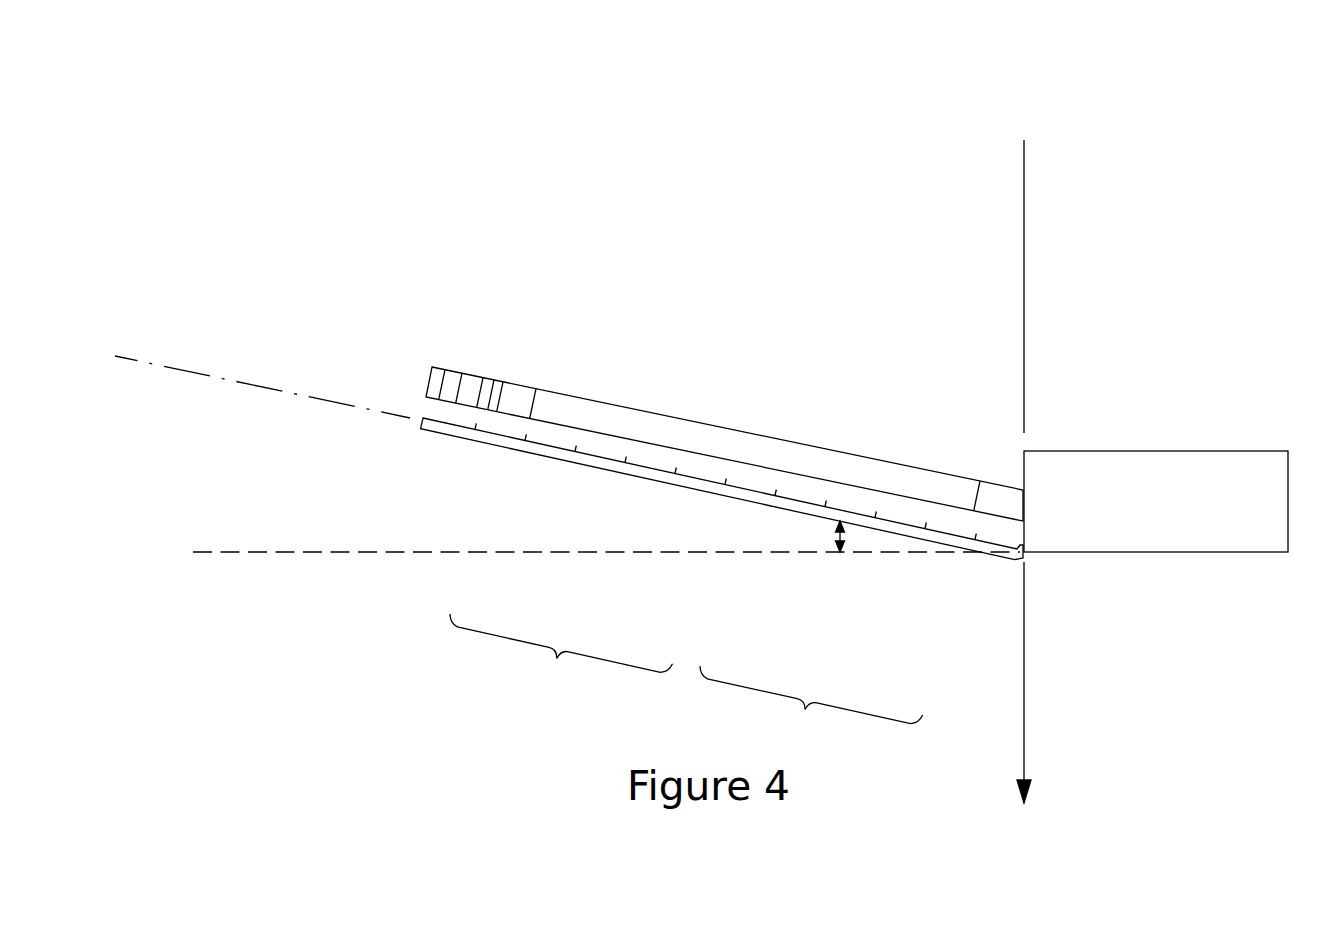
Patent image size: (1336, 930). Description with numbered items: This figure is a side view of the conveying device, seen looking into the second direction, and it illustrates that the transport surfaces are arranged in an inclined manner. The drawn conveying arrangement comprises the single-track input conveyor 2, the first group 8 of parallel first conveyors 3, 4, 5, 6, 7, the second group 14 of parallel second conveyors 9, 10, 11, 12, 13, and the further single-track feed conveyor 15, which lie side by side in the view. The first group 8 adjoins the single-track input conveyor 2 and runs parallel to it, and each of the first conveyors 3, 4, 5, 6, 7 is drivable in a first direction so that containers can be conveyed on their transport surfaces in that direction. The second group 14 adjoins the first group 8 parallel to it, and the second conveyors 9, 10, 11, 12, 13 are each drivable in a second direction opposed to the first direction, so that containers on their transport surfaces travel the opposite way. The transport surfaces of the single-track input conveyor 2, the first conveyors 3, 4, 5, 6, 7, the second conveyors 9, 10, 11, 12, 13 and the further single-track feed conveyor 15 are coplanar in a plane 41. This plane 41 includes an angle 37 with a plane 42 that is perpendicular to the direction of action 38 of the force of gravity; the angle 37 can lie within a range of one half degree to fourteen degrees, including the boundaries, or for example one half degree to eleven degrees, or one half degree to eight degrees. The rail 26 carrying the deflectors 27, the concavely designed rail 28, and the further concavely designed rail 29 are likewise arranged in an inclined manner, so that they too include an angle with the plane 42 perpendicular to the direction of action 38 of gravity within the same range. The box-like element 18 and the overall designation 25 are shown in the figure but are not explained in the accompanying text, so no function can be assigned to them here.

The single-track input conveyor 2 is at (443, 436).
The first conveyor 3 is at (493, 446).
The first conveyor 4 is at (545, 457).
The first conveyor 5 is at (596, 468).
The first conveyor 6 is at (645, 478).
The first conveyor 7 is at (693, 490).
The first group 8 is at (559, 652).
The second conveyor 9 is at (750, 500).
The second conveyor 10 is at (780, 508).
The second conveyor 11 is at (832, 520).
The second conveyor 12 is at (897, 530).
The second conveyor 13 is at (948, 540).
The second group 14 is at (809, 706).
The further single-track feed conveyor 15 is at (998, 553).
The evaluation unit 18 is at (1233, 456).
The arrangement 25 is at (162, 287).
The rail 26 is at (514, 401).
The deflectors 27 is at (500, 410).
The concavely designed rail 28 is at (697, 448).
The further concavely designed rail 29 is at (1001, 511).
The angle 37 is at (847, 533).
The direction of action of the force of gravity 38 is at (1027, 746).
The plane 41 is at (290, 391).
The plane perpendicular to the direction of action of gravity 42 is at (258, 551).